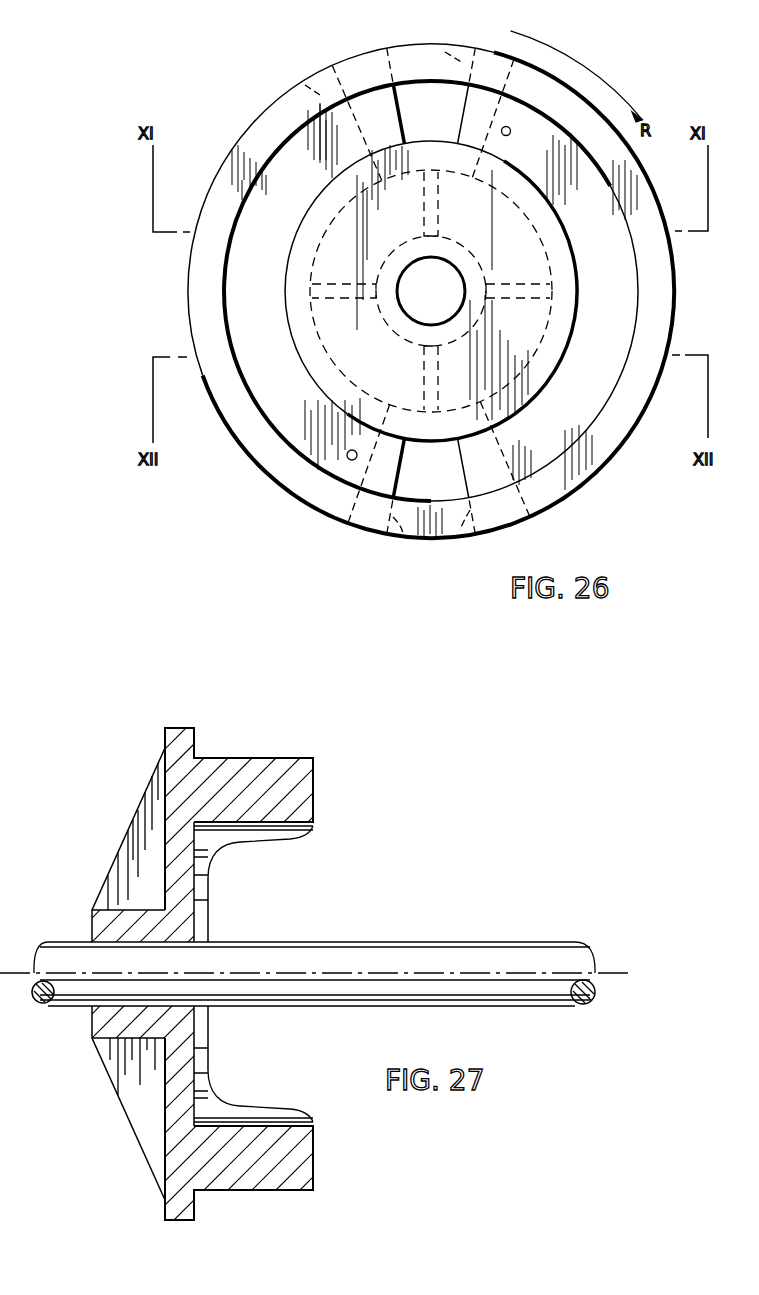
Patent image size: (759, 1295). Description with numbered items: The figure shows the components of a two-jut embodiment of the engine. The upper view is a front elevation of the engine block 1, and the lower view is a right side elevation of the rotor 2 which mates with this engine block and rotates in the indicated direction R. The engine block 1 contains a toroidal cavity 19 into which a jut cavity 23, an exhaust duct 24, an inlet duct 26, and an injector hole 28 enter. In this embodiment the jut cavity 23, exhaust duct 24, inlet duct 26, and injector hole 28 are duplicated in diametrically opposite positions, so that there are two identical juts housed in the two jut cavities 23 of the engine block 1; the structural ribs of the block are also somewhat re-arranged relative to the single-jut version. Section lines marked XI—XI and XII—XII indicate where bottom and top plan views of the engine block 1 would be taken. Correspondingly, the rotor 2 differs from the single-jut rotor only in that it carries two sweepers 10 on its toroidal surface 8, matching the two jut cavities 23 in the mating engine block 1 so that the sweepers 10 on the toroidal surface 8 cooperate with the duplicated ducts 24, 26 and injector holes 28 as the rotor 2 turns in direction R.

In FIG. 26, the engine block 1 is at (605, 443).
In FIG. 26, the toroidal cavity 19 is at (268, 252).
In FIG. 26, the jut cavity 23 is at (432, 123).
In FIG. 26, the exhaust duct 24 is at (308, 77).
In FIG. 26, the inlet duct 26 is at (439, 43).
In FIG. 26, the injector hole 28 is at (510, 135).
In FIG. 27, the rotor 2 is at (94, 929).
In FIG. 27, the toroidal surface 8 is at (210, 1040).
In FIG. 27, the sweeper 10 is at (249, 785).